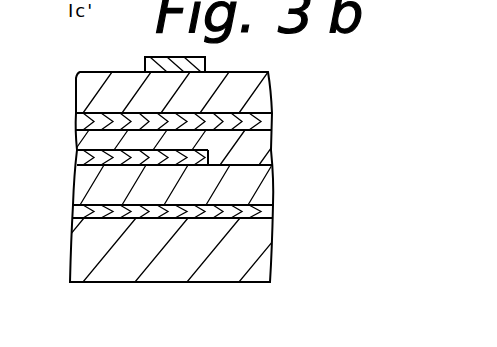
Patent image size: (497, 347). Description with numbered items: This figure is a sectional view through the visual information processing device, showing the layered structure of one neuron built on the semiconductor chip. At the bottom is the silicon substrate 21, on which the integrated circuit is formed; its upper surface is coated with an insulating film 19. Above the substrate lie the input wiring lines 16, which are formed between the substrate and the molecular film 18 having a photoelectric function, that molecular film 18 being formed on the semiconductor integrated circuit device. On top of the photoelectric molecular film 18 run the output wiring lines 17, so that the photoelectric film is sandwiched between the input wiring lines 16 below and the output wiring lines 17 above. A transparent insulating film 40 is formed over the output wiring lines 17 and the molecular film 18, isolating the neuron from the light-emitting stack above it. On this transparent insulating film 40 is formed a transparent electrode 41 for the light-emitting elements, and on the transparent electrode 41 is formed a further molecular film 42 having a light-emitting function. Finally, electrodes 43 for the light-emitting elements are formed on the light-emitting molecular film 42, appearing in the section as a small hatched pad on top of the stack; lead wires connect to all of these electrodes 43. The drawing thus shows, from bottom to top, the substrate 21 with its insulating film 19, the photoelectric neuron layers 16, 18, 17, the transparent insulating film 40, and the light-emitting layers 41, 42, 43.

The electrodes for the light-emitting elements 43 is at (205, 62).
The molecular film having a light-emitting function 42 is at (260, 90).
The transparent electrode 41 is at (262, 118).
The transparent insulating film 40 is at (258, 148).
The output wiring lines 17 is at (80, 158).
The molecular film having a photoelectric function 18 is at (262, 185).
The input wiring lines 16 is at (264, 212).
The insulating film 19 is at (76, 207).
The silicon substrate 21 is at (258, 258).